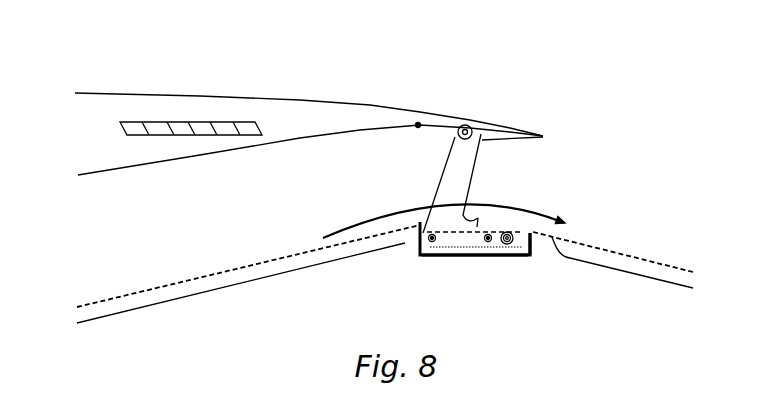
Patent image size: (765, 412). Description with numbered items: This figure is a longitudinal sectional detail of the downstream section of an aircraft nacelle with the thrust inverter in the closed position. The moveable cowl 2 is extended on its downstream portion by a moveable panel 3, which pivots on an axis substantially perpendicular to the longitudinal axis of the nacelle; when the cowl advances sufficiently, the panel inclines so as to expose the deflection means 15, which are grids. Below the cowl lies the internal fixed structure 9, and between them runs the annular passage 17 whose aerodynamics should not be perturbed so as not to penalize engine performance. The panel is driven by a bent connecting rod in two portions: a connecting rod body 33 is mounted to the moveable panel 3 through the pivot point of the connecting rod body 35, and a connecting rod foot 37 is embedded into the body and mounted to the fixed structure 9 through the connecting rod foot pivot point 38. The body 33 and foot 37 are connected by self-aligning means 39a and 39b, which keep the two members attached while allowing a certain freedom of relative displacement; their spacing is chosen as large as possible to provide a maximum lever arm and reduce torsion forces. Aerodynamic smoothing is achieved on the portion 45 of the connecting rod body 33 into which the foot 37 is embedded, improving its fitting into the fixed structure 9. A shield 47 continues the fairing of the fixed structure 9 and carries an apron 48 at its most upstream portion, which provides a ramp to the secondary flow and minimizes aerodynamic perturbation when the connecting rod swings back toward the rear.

The moveable cowl 2 is at (290, 98).
The moveable panel 3 is at (443, 112).
The internal fixed structure 9 is at (277, 275).
The deflection means 15 is at (153, 125).
The annular passage 17 is at (160, 257).
The connecting rod body 33 is at (440, 180).
The pivot point of the connecting rod body 35 is at (473, 126).
The connecting rod foot 37 is at (503, 257).
The connecting rod foot pivot point 38 is at (532, 260).
The self-aligning means 39a is at (423, 257).
The self-aligning means 39b is at (480, 257).
The portion of the connecting rod body 45 is at (477, 227).
The shield 47 is at (507, 227).
The apron 48 is at (420, 226).